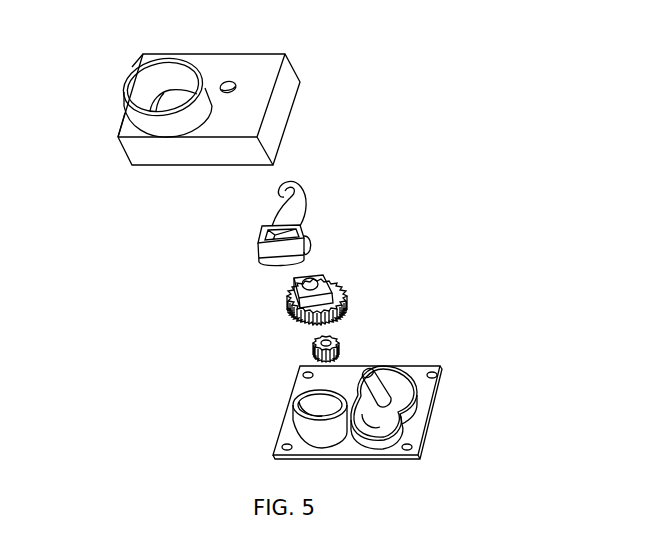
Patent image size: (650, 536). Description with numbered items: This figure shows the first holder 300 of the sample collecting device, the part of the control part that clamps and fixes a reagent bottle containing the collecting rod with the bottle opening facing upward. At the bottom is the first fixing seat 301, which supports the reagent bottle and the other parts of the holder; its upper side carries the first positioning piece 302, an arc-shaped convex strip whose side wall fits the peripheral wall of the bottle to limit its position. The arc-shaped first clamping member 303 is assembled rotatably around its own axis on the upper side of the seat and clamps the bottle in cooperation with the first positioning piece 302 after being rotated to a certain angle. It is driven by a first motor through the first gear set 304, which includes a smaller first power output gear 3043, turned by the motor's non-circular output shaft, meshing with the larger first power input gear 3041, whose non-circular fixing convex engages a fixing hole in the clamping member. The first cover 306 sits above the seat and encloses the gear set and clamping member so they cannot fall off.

The first holder 300 is at (387, 36).
The first fixing seat 301 is at (425, 368).
The first positioning piece 302 is at (295, 432).
The first clamping member 303 is at (306, 235).
The first gear set 304 is at (312, 269).
The first power input gear 3041 is at (289, 302).
The first power output gear 3043 is at (312, 345).
The first cover 306 is at (143, 148).